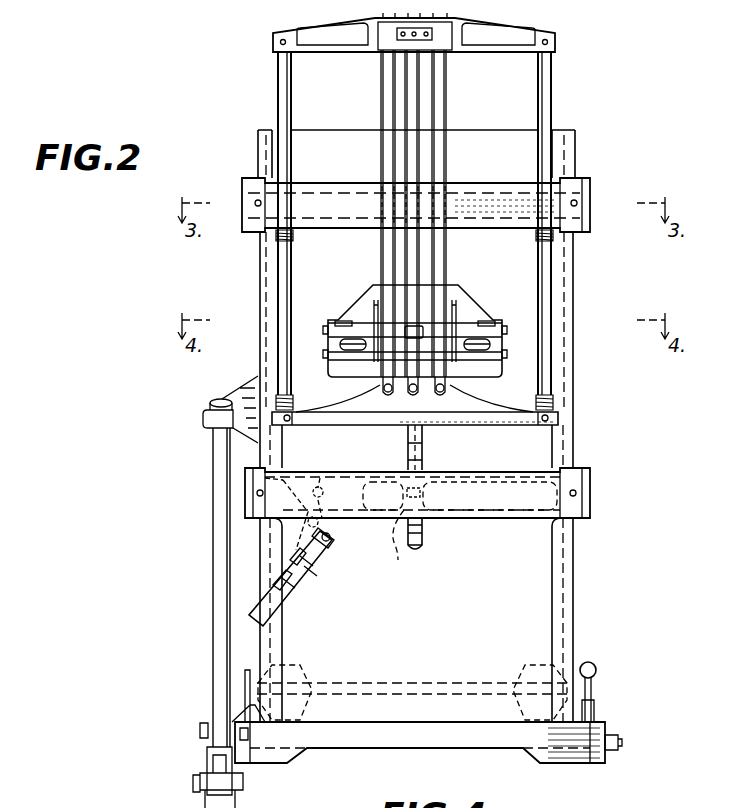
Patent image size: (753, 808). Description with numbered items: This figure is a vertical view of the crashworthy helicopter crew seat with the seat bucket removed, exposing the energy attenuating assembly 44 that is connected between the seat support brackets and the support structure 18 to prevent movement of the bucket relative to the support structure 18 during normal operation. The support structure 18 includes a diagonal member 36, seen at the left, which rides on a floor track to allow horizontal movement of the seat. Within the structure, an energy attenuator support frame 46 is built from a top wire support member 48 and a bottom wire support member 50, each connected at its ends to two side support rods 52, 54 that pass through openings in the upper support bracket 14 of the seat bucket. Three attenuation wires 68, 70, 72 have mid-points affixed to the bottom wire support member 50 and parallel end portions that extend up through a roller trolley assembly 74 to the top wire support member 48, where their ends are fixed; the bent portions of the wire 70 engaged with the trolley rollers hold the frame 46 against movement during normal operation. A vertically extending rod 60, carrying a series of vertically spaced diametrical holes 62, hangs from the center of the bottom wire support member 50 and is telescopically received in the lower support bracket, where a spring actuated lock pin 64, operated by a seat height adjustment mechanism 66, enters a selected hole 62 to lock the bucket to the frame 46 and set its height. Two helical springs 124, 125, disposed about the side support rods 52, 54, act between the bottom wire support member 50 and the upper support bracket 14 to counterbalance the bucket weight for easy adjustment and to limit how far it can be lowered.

The support bracket 14 is at (341, 197).
The support structure 18 is at (565, 156).
The diagonal member 36 is at (213, 478).
The energy attenuating assembly 44 is at (556, 96).
The energy attenuator support frame 46 is at (276, 88).
The top wire support member 48 is at (337, 35).
The bottom wire support member 50 is at (468, 413).
The side support rod 52 is at (287, 116).
The side support rod 54 is at (543, 117).
The vertically extending rod 60 is at (408, 455).
The diametrical holes 62 is at (424, 544).
The spring actuated lock pin 64 is at (408, 543).
The seat height adjustment mechanism 66 is at (315, 560).
The attenuation wire 68 is at (382, 88).
The attenuation wire 70 is at (420, 88).
The attenuation wire 72 is at (448, 111).
The roller trolley assembly 74 is at (351, 294).
The helical spring 124 is at (292, 234).
The helical spring 125 is at (537, 234).